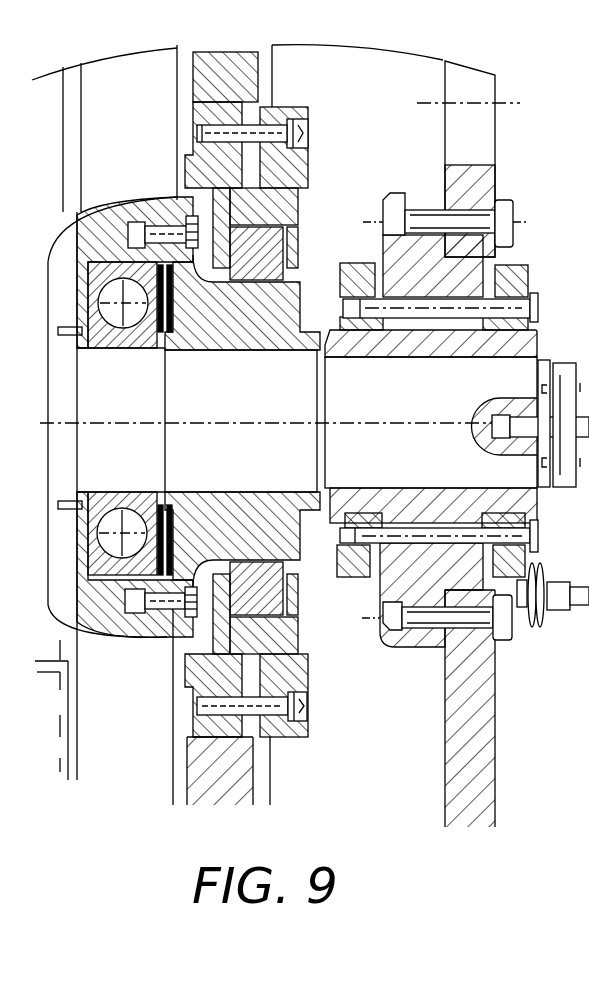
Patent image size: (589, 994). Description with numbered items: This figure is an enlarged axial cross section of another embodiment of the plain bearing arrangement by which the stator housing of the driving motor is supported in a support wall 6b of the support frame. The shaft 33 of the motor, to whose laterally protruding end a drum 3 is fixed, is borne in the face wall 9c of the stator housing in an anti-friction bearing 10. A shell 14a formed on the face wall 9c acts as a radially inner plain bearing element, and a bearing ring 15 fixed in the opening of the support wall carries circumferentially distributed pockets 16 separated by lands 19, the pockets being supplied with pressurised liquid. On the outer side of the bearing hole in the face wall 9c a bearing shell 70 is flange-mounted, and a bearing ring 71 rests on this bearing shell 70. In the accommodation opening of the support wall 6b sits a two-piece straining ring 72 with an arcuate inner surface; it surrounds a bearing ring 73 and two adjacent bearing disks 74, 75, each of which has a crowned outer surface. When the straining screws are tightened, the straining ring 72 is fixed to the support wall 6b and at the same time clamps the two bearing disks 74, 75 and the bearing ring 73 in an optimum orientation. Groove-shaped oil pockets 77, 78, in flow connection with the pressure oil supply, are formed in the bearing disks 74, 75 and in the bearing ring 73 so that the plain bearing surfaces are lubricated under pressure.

The drum 3 is at (437, 753).
The support wall 6b is at (212, 787).
The face wall 9c is at (89, 496).
The anti-friction bearing 10 is at (110, 535).
The shell 14a is at (0, 183).
The bearing ring 15 is at (0, 268).
The pockets 16 is at (0, 224).
The lands 19 is at (0, 320).
The shaft 33 is at (457, 441).
The bearing shell 70 is at (245, 323).
The bearing ring 71 is at (277, 563).
The straining ring 72 is at (262, 112).
The bearing ring 73 is at (298, 140).
The bearing disk 74 is at (177, 173).
The bearing disk 75 is at (290, 212).
The oil pockets 77 is at (263, 217).
The oil pockets 78 is at (225, 243).